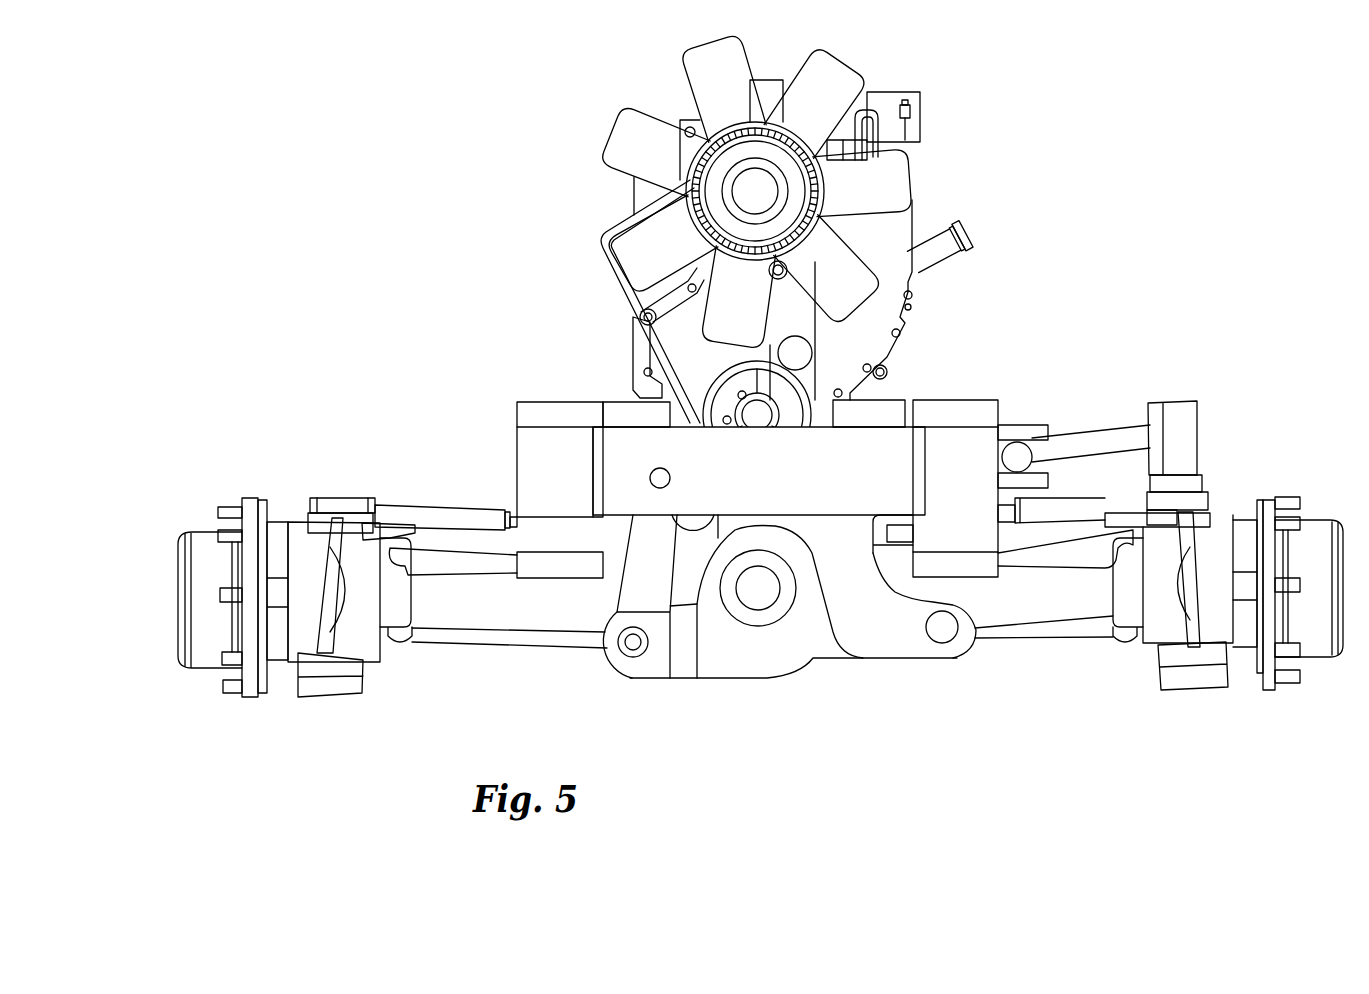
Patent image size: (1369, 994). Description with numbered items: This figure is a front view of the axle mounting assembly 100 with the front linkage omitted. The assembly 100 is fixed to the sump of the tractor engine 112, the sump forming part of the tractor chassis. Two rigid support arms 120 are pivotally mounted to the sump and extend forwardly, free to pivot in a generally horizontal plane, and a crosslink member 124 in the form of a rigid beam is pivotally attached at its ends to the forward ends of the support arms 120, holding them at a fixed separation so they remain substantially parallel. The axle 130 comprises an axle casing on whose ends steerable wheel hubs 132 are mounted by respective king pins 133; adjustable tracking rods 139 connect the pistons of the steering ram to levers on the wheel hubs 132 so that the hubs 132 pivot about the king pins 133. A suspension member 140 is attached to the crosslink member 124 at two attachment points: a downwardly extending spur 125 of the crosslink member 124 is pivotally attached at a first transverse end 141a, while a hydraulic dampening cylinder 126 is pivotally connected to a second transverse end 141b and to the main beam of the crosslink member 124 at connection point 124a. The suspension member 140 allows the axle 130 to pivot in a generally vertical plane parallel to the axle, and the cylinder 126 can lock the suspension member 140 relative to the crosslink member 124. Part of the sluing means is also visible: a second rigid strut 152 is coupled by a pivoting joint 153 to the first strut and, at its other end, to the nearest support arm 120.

The axle mounting assembly 100 is at (1100, 307).
The tractor engine 112 is at (907, 100).
The rigid support arm 120 is at (577, 494).
The crosslink member 124 is at (632, 468).
The connection point 124a is at (657, 470).
The downwardly extending spur 125 is at (882, 617).
The hydraulic dampening cylinder 126 is at (648, 583).
The axle 130 is at (547, 610).
The steerable wheel hub 132 is at (280, 547).
The king pin 133 is at (346, 496).
The adjustable tracking rod 139 is at (447, 520).
The suspension member 140 is at (768, 660).
The first transverse end 141a is at (942, 627).
The second transverse end 141b is at (633, 642).
The second rigid strut 152 is at (1111, 447).
The pivoting joint 153 is at (1207, 408).